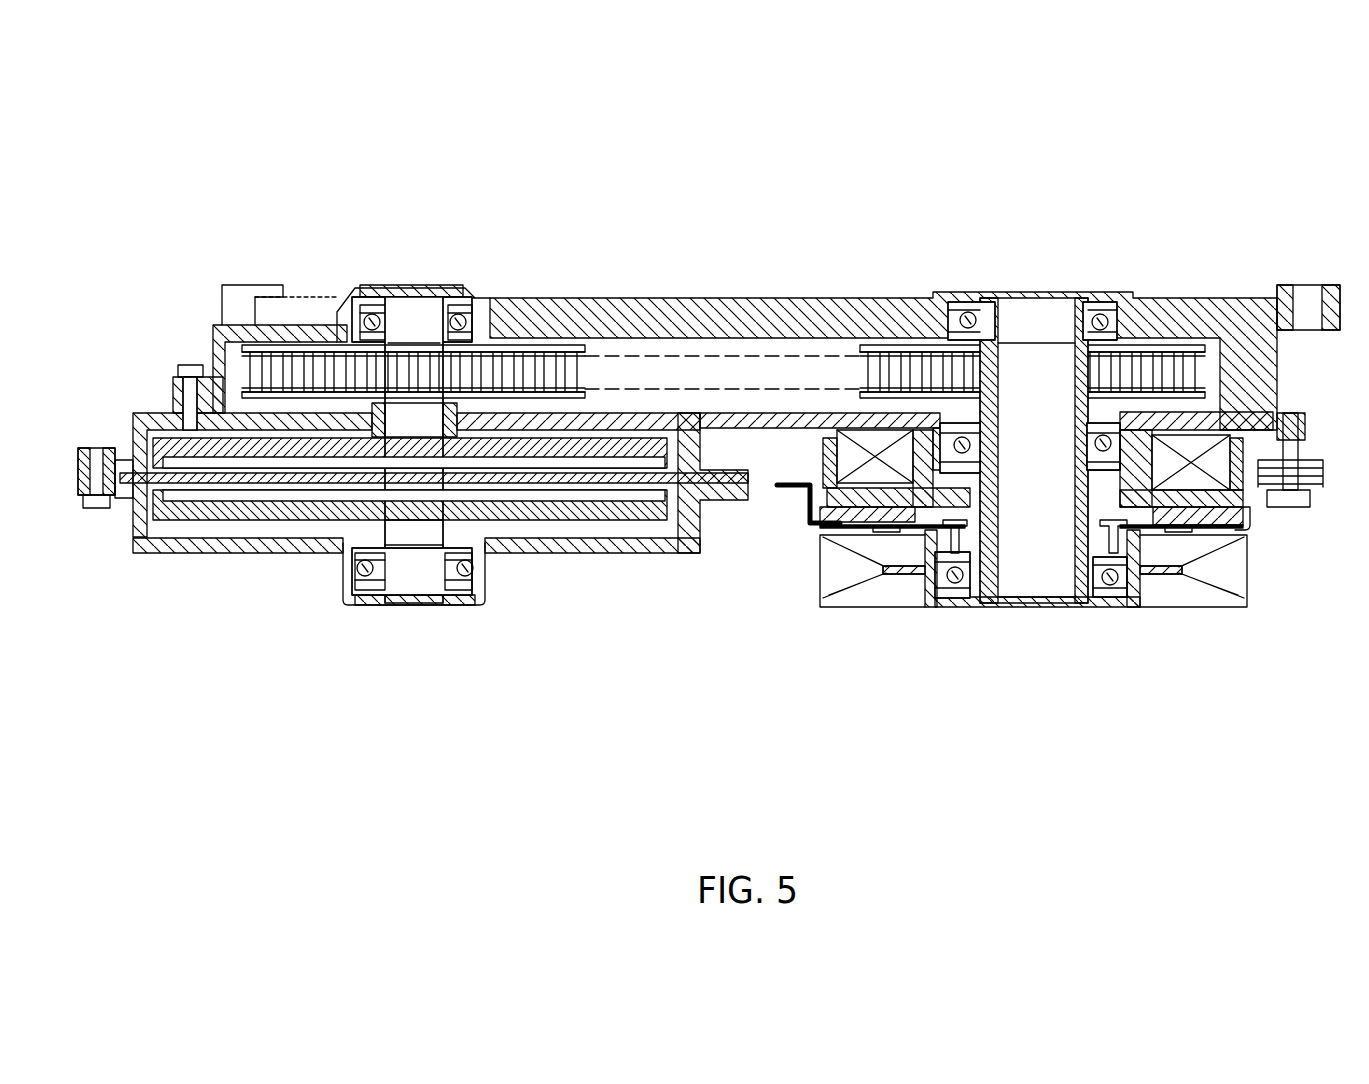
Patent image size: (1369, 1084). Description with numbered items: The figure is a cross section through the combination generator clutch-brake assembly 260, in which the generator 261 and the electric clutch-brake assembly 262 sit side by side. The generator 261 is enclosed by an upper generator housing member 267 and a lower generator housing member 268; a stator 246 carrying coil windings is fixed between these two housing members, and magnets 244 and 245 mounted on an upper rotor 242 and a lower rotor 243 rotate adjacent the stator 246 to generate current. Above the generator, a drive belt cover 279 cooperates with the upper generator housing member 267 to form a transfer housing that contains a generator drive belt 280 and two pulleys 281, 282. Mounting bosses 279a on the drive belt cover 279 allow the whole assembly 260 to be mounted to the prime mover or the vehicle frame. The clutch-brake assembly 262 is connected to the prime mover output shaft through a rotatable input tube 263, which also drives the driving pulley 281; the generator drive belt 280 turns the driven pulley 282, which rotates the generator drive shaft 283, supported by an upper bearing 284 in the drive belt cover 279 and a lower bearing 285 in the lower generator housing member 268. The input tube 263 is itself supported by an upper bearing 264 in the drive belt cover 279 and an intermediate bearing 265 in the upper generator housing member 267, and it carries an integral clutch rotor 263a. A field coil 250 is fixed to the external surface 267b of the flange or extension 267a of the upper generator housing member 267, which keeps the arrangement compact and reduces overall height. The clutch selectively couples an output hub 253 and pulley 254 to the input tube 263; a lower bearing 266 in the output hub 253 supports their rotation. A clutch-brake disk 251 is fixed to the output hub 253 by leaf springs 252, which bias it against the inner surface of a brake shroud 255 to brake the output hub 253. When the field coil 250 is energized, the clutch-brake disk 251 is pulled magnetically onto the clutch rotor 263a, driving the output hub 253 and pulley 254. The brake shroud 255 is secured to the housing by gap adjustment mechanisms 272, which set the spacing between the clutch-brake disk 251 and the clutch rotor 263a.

The generator clutch-brake assembly 260 is at (233, 131).
The generator 261 is at (240, 593).
The clutch-brake assembly 262 is at (840, 641).
The input tube 263 is at (997, 312).
The clutch rotor 263a is at (822, 497).
The upper bearing 264 is at (1092, 322).
The intermediate bearing 265 is at (1095, 443).
The lower bearing 266 is at (1100, 577).
The upper generator housing member 267 is at (133, 428).
The flange or extension 267a is at (850, 425).
The external surface 267b is at (1150, 476).
The lower generator housing member 268 is at (133, 538).
The gap adjustment mechanisms 272 is at (1315, 518).
The drive belt cover 279 is at (213, 338).
The mounting bosses 279a is at (240, 285).
The generator drive belt 280 is at (672, 355).
The driving pulley 281 is at (896, 352).
The driven pulley 282 is at (535, 352).
The generator drive shaft 283 is at (414, 320).
The upper bearing 284 is at (364, 321).
The lower bearing 285 is at (357, 569).
The upper rotor 242 is at (655, 445).
The lower rotor 243 is at (660, 512).
The magnets 244 is at (578, 462).
The magnets 245 is at (538, 497).
The stator 246 is at (593, 483).
The field coil 250 is at (848, 452).
The clutch-brake disk 251 is at (826, 512).
The leaf springs 252 is at (880, 568).
The output hub 253 is at (930, 580).
The pulley 254 is at (1170, 600).
The brake shroud 255 is at (1252, 526).